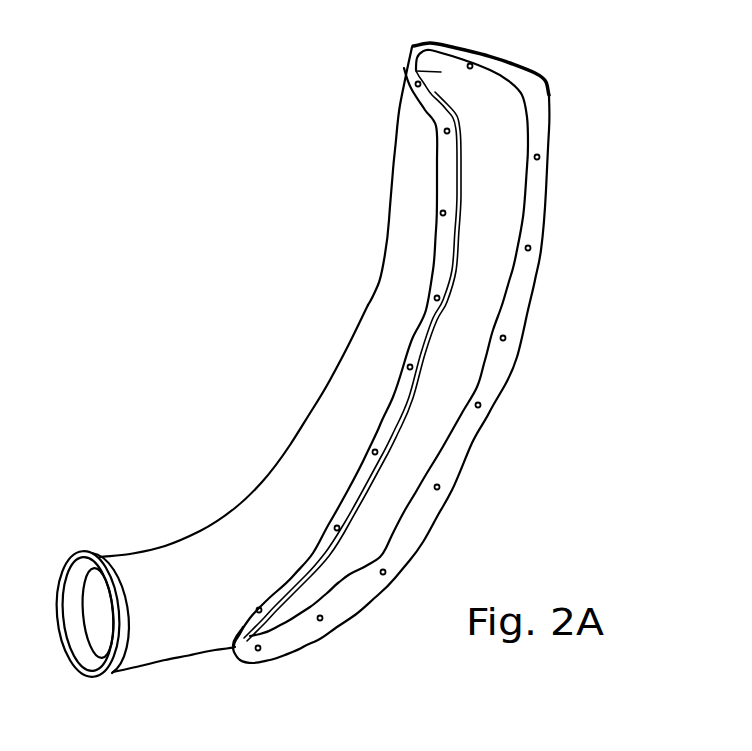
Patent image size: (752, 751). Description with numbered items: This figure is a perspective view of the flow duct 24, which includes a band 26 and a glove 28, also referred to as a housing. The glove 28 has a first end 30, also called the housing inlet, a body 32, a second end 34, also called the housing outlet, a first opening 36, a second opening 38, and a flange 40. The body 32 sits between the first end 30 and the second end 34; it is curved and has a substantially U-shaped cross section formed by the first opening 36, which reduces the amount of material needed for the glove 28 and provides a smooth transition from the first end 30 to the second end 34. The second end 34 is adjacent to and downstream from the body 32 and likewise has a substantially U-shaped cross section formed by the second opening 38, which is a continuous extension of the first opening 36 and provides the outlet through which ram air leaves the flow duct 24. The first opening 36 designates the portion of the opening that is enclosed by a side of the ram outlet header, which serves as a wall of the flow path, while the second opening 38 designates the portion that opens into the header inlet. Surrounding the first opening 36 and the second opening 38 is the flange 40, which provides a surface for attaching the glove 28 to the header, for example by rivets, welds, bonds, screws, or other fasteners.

The flow duct 24 is at (334, 341).
The band 26 is at (76, 555).
The glove 28 is at (298, 428).
The first end 30 is at (146, 572).
The body 32 is at (360, 376).
The second end 34 is at (440, 80).
The first opening 36 is at (472, 303).
The second opening 38 is at (428, 333).
The flange 40 is at (540, 140).